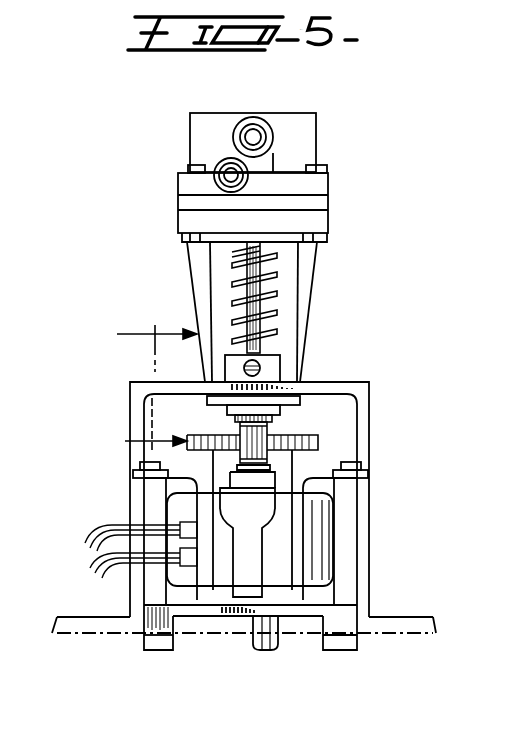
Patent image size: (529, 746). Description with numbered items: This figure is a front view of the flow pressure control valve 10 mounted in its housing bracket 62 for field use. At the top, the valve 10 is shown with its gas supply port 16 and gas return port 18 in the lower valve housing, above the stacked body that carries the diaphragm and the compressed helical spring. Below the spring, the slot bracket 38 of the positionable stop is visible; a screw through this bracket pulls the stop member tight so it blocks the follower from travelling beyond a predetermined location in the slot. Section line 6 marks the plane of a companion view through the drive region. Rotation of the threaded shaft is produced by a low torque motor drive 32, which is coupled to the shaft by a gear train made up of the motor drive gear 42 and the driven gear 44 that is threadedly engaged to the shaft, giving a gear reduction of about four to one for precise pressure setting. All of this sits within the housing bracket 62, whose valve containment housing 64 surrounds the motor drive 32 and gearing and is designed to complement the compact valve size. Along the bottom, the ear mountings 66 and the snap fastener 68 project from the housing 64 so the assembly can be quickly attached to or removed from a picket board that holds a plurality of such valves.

The flow pressure control valve 10 is at (165, 210).
The gas supply port 16 is at (258, 120).
The gas return port 18 is at (215, 168).
The section line 6 is at (157, 383).
The slot bracket 38 is at (273, 372).
The motor drive gear 42 is at (263, 437).
The driven gear 44 is at (318, 441).
The housing bracket 62 is at (125, 389).
The valve containment housing 64 is at (135, 502).
The motor drive 32 is at (323, 527).
The ear mountings 66 is at (160, 627).
The snap fastener 68 is at (258, 652).